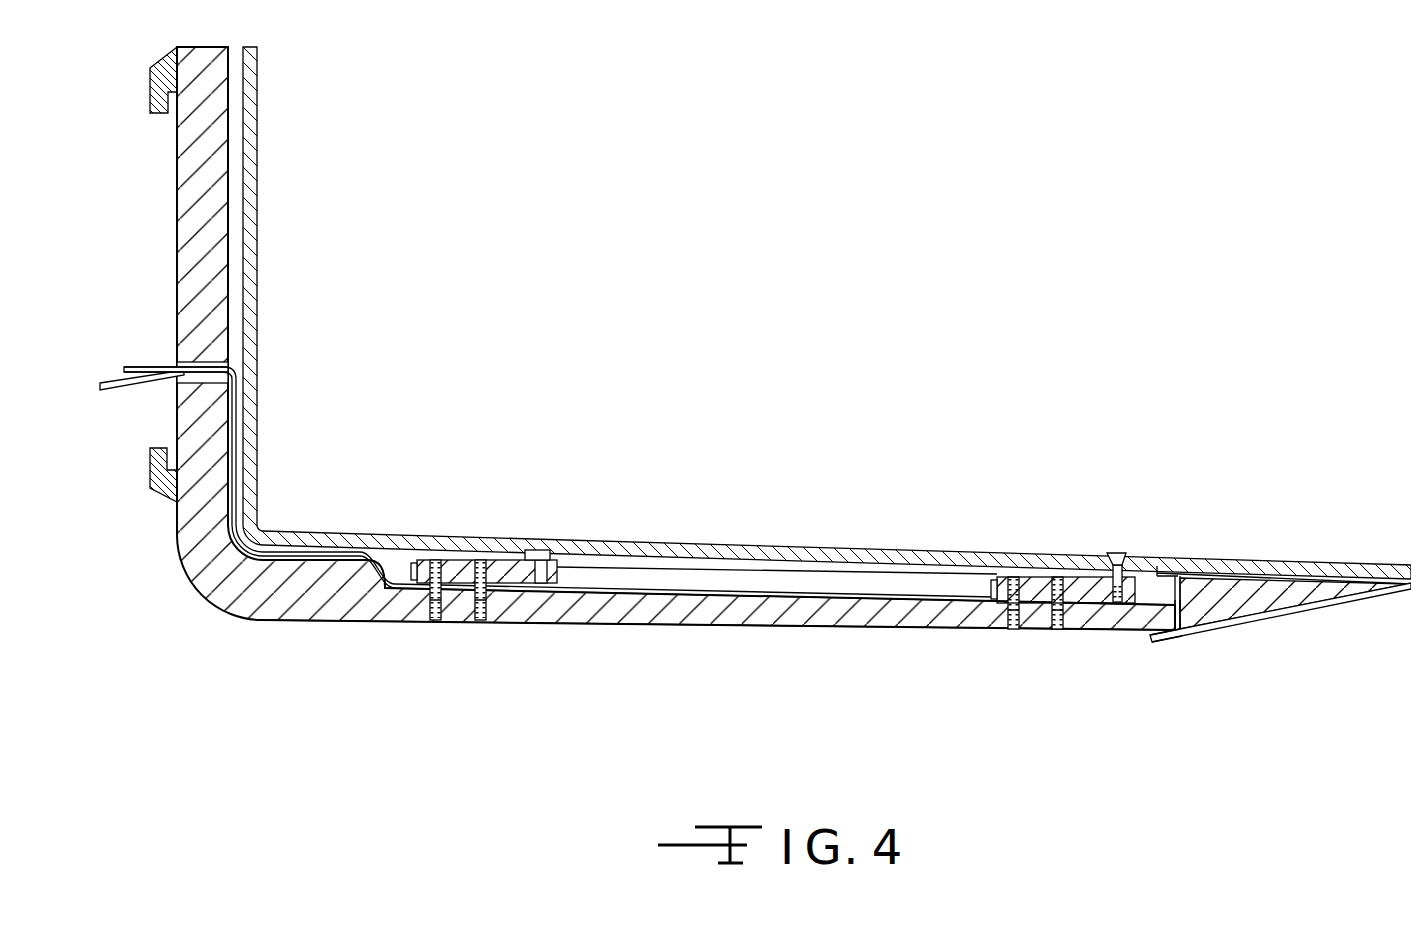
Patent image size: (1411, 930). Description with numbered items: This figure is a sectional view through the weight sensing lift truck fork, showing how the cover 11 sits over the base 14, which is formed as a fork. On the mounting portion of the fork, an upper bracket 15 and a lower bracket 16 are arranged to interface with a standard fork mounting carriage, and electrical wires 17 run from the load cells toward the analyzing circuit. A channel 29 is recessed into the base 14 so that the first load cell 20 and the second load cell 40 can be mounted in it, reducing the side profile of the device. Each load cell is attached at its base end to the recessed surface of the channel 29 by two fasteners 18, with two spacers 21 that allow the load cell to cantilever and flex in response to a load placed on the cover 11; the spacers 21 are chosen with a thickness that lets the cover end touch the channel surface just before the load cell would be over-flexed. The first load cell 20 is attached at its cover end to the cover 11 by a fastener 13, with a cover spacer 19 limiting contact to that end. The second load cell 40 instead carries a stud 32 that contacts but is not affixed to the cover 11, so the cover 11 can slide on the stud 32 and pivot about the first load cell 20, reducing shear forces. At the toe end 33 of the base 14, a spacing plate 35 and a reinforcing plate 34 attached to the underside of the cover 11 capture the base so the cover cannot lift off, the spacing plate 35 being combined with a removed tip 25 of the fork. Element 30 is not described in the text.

The cover 11 is at (266, 157).
The fastener 13 is at (1115, 553).
The base 14 is at (760, 626).
The upper bracket 15 is at (150, 99).
The lower bracket 16 is at (150, 470).
The electrical wires 17 is at (135, 368).
The fasteners 18 is at (435, 560).
The cover spacer 19 is at (1140, 570).
The first load cell 20 is at (1090, 577).
The spacers 21 is at (432, 600).
The removed tip 25 is at (1298, 606).
The channel 29 is at (752, 582).
The heating wire 30 is at (230, 368).
The stud 32 is at (545, 552).
The toe end 33 is at (1185, 615).
The reinforcing plate 34 is at (1160, 643).
The spacing plate 35 is at (1248, 590).
The second load cell 40 is at (500, 560).